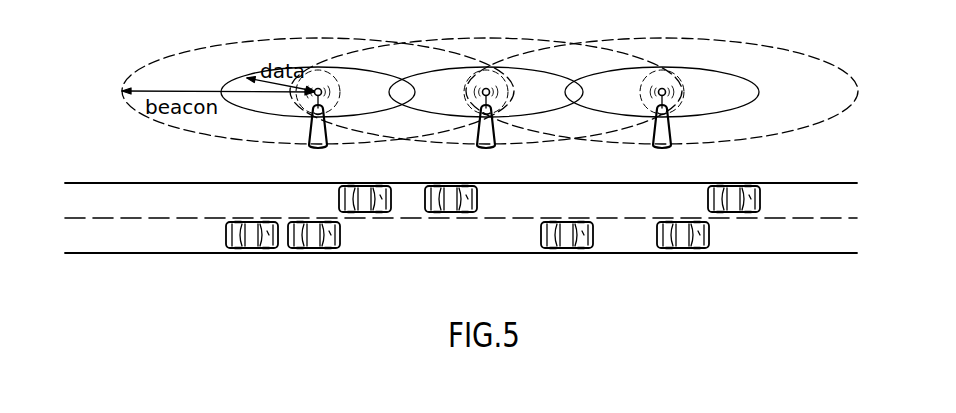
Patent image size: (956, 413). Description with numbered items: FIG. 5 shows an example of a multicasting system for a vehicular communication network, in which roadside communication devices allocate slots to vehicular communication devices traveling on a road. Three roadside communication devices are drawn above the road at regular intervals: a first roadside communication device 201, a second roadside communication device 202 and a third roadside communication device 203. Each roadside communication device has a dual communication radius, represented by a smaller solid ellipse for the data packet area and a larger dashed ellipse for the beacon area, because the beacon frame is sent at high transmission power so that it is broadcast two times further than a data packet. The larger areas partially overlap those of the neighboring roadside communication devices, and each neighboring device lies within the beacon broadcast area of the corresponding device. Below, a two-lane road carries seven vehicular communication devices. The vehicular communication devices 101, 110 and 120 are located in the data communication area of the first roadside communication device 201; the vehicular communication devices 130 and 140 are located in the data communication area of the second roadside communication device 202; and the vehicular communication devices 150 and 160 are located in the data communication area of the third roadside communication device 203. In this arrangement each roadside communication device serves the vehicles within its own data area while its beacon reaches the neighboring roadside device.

The vehicular communication device 101 is at (241, 248).
The vehicular communication device 110 is at (309, 248).
The vehicular communication device 120 is at (365, 213).
The vehicular communication device 130 is at (457, 213).
The vehicular communication device 140 is at (567, 248).
The vehicular communication device 150 is at (685, 248).
The vehicular communication device 160 is at (735, 213).
The first roadside communication device 201 is at (308, 136).
The second roadside communication device 202 is at (474, 136).
The third roadside communication device 203 is at (650, 136).